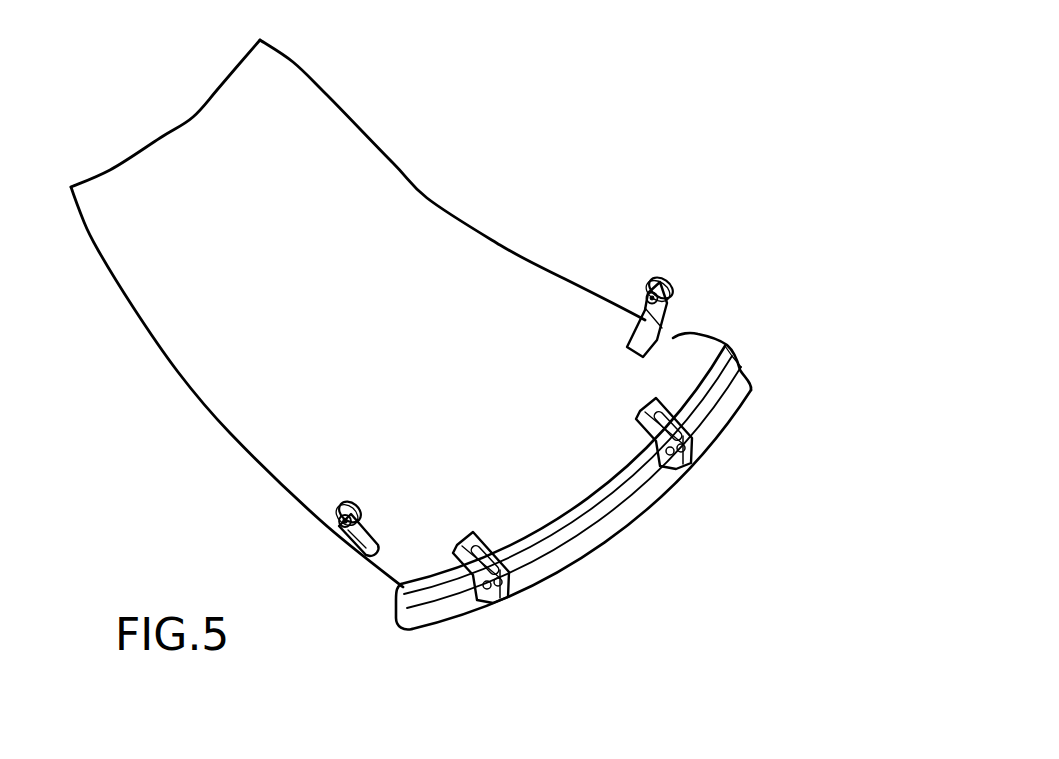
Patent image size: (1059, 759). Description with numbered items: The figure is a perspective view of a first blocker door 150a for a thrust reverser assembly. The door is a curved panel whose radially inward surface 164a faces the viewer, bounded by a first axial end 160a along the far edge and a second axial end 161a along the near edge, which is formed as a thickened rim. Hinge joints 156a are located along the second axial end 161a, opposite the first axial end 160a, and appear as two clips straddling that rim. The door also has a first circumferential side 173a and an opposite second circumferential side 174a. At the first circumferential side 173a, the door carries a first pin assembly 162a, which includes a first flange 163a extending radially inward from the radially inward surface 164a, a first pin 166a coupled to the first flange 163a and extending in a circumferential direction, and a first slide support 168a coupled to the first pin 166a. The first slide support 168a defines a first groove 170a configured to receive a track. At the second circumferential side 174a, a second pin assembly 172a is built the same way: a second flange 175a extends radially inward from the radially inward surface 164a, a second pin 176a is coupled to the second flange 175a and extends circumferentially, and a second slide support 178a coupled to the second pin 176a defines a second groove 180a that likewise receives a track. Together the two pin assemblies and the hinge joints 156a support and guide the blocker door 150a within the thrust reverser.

The first blocker door 150a is at (397, 120).
The hinge joints 156a is at (505, 597).
The first axial end 160a is at (165, 137).
The second axial end 161a is at (588, 542).
The first pin assembly 162a is at (678, 220).
The first flange 163a is at (640, 302).
The radially inward surface 164a is at (371, 326).
The first pin 166a is at (668, 307).
The first slide support 168a is at (665, 278).
The first groove 170a is at (652, 270).
The second pin assembly 172a is at (381, 510).
The first circumferential side 173a is at (428, 203).
The second circumferential side 174a is at (178, 372).
The second flange 175a is at (360, 543).
The second pin 176a is at (340, 525).
The second slide support 178a is at (340, 514).
The second groove 180a is at (355, 498).